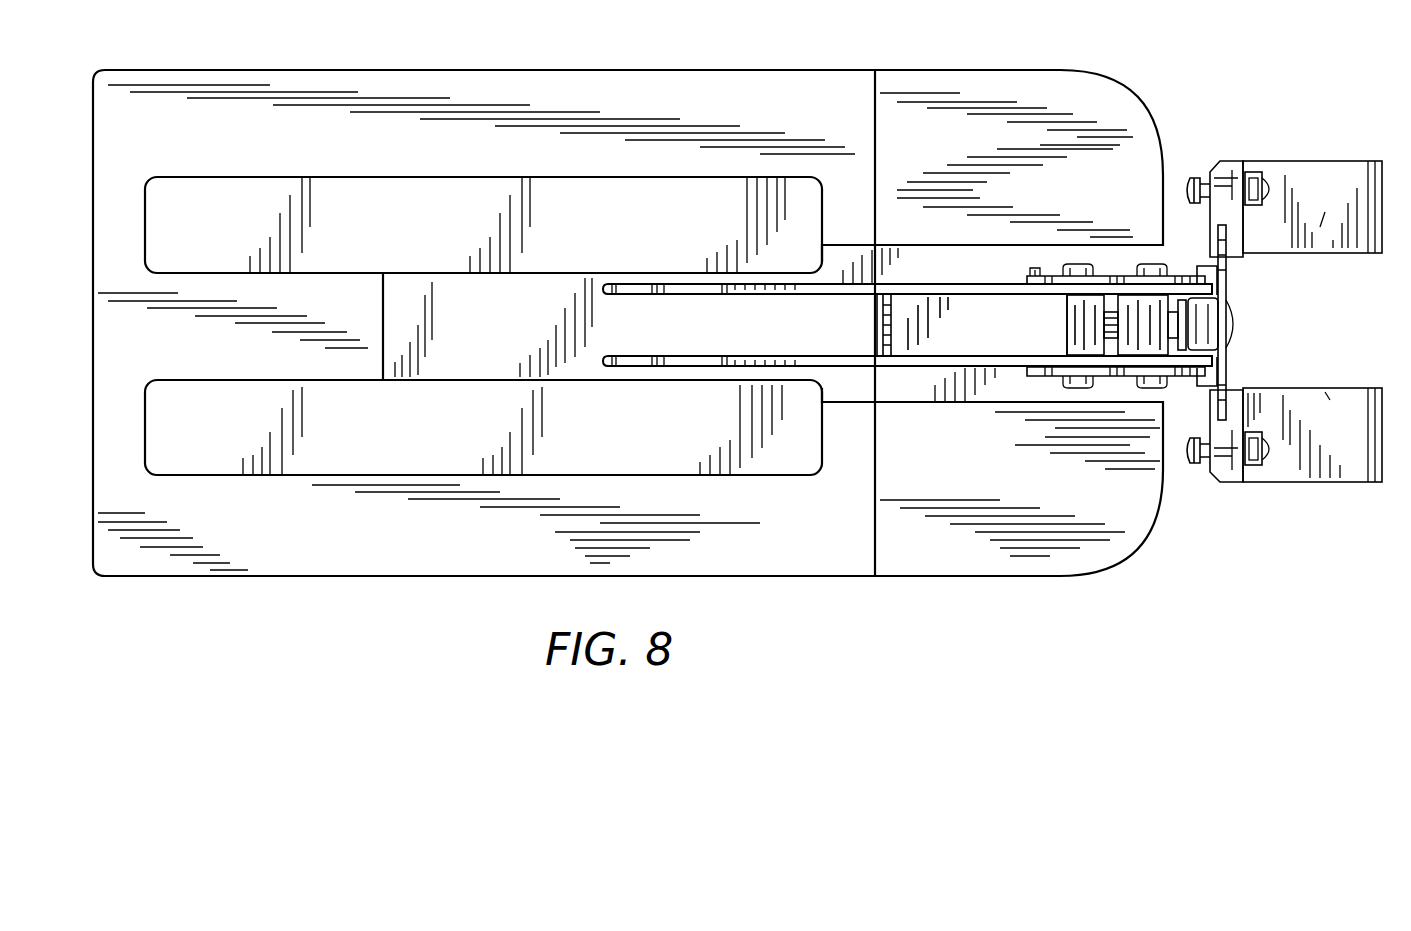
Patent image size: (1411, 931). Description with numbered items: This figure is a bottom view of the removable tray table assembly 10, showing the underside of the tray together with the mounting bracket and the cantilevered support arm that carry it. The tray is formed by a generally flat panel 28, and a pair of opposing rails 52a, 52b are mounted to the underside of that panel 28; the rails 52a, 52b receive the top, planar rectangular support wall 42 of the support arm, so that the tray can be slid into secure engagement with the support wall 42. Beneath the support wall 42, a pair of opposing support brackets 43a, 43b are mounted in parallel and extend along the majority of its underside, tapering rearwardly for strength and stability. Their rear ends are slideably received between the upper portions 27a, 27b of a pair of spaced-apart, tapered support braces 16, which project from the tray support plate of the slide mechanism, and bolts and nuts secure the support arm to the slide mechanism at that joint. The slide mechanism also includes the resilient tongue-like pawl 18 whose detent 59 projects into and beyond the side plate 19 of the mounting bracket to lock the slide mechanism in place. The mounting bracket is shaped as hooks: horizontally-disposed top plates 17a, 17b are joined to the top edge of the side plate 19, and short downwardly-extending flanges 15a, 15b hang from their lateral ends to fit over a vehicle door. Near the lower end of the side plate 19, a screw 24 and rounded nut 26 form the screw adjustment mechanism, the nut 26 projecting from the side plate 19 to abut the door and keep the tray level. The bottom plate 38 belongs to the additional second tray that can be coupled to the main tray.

The tray table assembly 10 is at (1089, 44).
The flat panel 28 is at (784, 109).
The bottom plate 38 is at (1101, 195).
The rail 52b is at (645, 252).
The rail 52a is at (472, 430).
The support wall 42 is at (509, 333).
The support bracket 43b is at (853, 297).
The support bracket 43a is at (866, 367).
The upper portion of brace 27b is at (1030, 276).
The upper portion of brace 27a is at (1040, 378).
The pawl 18 is at (1203, 352).
The support braces 16 is at (1224, 293).
The detent 59 is at (1245, 312).
The side plate 19 is at (1229, 188).
The flange 15b is at (1384, 170).
The flange 15a is at (1384, 398).
The top plate 17b is at (1322, 232).
The top plate 17a is at (1330, 392).
The screw 24 is at (1197, 178).
The rounded nut 26 is at (1258, 178).